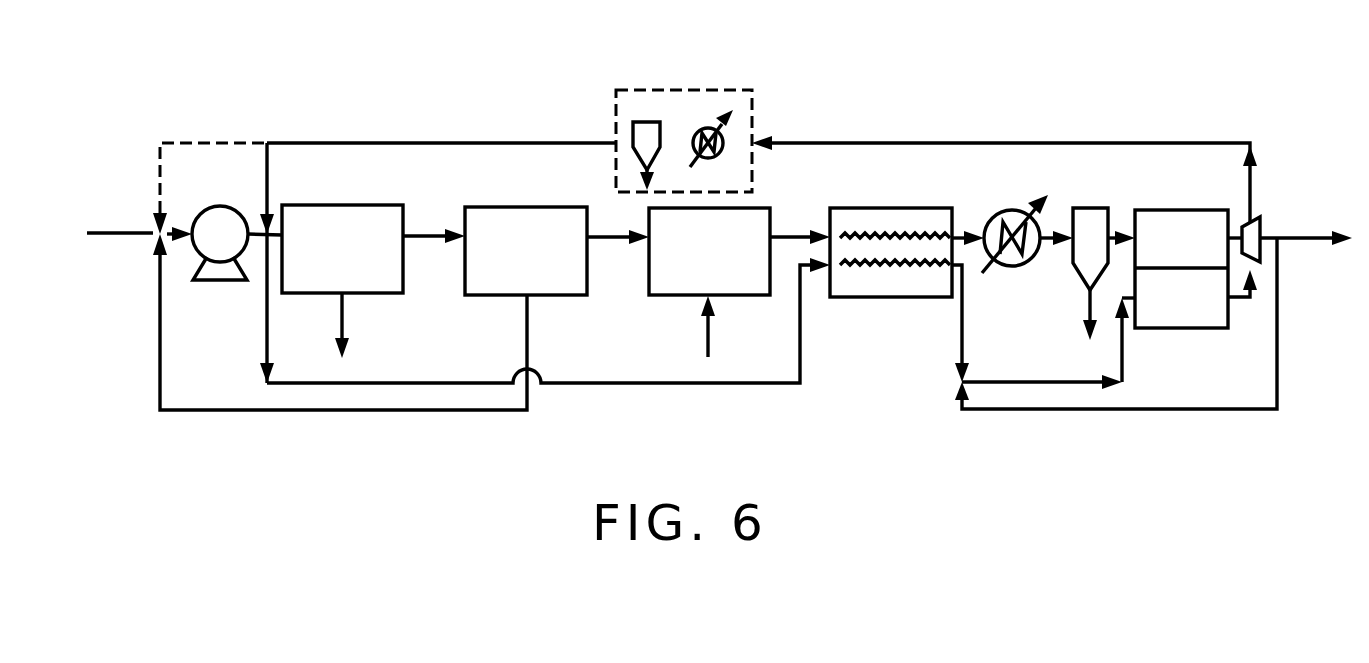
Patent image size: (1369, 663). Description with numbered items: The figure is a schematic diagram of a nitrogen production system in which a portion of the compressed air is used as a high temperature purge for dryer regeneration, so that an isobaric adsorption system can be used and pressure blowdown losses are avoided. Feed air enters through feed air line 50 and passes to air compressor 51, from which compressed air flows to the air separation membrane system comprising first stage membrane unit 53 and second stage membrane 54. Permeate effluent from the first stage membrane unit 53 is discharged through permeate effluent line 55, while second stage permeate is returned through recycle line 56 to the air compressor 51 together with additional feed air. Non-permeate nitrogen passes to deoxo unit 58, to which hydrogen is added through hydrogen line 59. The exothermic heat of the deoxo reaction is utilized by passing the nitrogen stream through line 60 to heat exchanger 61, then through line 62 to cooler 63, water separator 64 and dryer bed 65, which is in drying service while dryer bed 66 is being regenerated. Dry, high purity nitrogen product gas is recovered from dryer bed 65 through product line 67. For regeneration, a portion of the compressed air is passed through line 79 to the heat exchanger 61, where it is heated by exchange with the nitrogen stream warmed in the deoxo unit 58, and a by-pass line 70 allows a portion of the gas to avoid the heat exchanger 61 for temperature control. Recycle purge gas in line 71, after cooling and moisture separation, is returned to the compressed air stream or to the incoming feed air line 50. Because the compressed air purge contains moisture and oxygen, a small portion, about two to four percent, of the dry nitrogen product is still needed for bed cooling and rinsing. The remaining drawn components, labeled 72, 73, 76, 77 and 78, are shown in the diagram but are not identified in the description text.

The feed air line 50 is at (105, 233).
The air compressor 51 is at (208, 206).
The bypass valve line 72 is at (160, 170).
The recycle line 73 is at (270, 172).
The first stage membrane unit 53 is at (346, 206).
The permeate effluent line 55 is at (344, 314).
The second stage permeate recycle line 56 is at (312, 410).
The second stage membrane 54 is at (495, 207).
The deoxo unit 58 is at (662, 296).
The hydrogen line 59 is at (710, 335).
The compressed air purge line 79 is at (683, 383).
The nitrogen line from deoxo unit 60 is at (800, 226).
The heat exchanger 61 is at (870, 208).
The nitrogen line to cooler 62 is at (962, 228).
The cooler 63 is at (1012, 210).
The water separator 64 is at (1084, 208).
The dryer bed 65 is at (1157, 210).
The dryer bed 66 is at (1173, 328).
The by-pass line 70 is at (1185, 409).
The recycle purge gas line 71 is at (1062, 118).
The turbine / expander 76 is at (1258, 224).
The product line 67 is at (1292, 238).
The heater in control unit 77 is at (708, 128).
The separator in control unit 78 is at (640, 121).